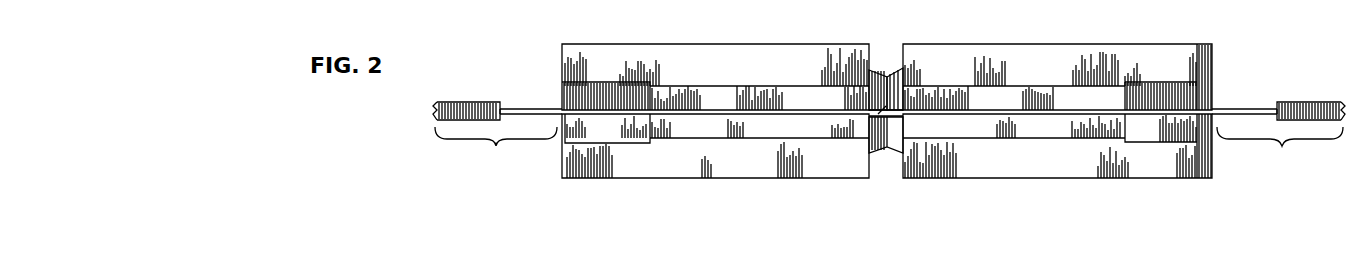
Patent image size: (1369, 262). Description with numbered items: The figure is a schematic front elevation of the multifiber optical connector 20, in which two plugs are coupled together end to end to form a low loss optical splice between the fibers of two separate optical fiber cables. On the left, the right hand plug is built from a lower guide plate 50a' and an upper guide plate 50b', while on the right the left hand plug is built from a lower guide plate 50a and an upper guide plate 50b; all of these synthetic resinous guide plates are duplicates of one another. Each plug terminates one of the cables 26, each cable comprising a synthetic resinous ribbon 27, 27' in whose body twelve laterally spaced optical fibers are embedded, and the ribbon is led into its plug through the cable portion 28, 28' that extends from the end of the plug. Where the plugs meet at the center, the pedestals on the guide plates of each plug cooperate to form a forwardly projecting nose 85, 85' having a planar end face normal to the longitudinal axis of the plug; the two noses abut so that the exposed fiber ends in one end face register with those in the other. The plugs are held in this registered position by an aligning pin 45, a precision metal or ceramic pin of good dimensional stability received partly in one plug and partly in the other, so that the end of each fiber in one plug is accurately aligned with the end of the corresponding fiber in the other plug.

The multifiber optical connector 20 is at (903, 212).
The optical fiber cable 26 is at (889, 149).
The synthetic resinous ribbon 27 is at (1311, 95).
The shaft end 27' is at (466, 95).
The shaft 28 is at (1244, 97).
The shaft 28' is at (531, 92).
The aligning pin 45 is at (878, 154).
The lower guide plate 50a is at (1057, 160).
The lower guide plate 50a' is at (715, 160).
The upper guide plate 50b is at (1057, 64).
The upper guide plate 50b' is at (715, 64).
The nose 85 is at (909, 64).
The nose 85' is at (863, 64).